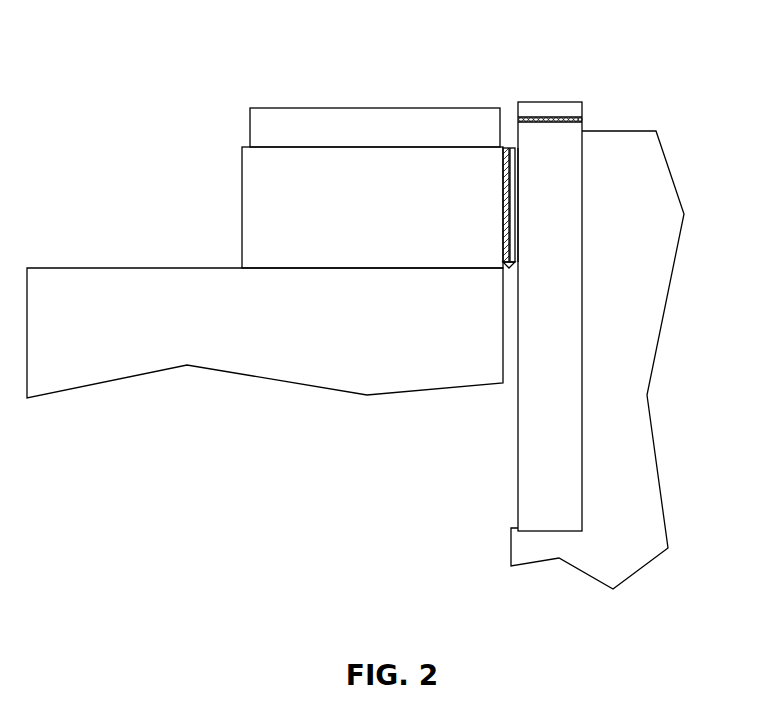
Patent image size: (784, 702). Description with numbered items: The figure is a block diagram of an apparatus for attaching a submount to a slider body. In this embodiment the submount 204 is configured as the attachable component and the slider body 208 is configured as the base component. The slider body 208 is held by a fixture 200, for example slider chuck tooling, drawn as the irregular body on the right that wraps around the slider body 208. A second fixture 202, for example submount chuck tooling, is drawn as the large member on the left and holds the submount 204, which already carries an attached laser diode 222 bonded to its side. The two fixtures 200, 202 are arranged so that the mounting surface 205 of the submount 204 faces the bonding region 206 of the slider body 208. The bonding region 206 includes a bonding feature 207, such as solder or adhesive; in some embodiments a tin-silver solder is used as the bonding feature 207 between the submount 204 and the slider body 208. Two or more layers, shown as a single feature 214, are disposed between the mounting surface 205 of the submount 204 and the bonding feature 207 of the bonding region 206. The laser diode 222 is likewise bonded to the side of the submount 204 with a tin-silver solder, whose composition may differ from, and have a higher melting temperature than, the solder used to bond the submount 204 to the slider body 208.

The fixture 200 is at (660, 172).
The fixture 202 is at (348, 385).
The submount 204 is at (372, 207).
The mounting surface 205 is at (507, 267).
The bonding region 206 is at (509, 148).
The bonding feature 207 is at (505, 263).
The slider body 208 is at (553, 101).
The layers 214 is at (504, 148).
The laser diode 222 is at (408, 118).